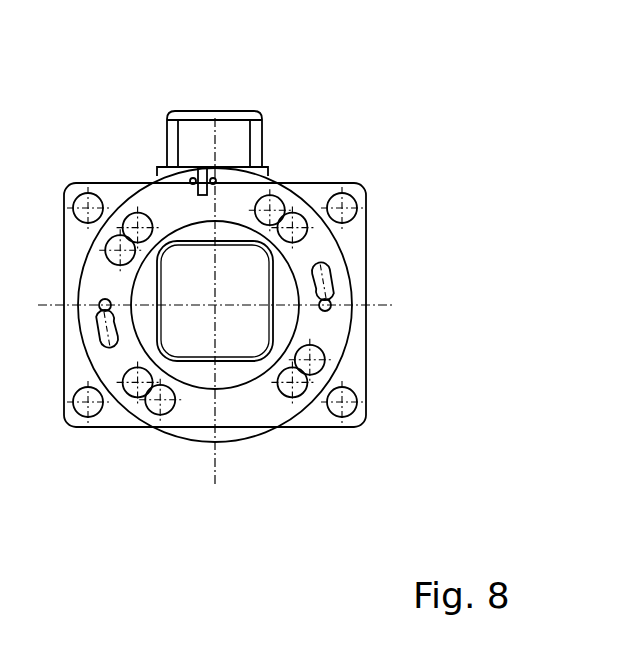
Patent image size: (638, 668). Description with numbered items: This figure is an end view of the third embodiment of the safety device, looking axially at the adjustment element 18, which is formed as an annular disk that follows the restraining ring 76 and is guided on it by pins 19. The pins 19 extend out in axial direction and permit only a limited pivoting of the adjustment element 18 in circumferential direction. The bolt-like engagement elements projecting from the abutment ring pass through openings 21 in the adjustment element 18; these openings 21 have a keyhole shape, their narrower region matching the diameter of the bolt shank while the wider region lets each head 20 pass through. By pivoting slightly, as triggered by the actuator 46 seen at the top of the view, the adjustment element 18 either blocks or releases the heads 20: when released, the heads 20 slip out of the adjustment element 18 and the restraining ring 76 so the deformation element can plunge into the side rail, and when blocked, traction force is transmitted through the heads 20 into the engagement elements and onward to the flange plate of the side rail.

The adjustment element 18 is at (232, 428).
The pins 19 is at (328, 304).
The head 20 is at (300, 218).
The openings 21 is at (277, 200).
The connector 46 is at (220, 128).
The mounting plate 76 is at (358, 233).